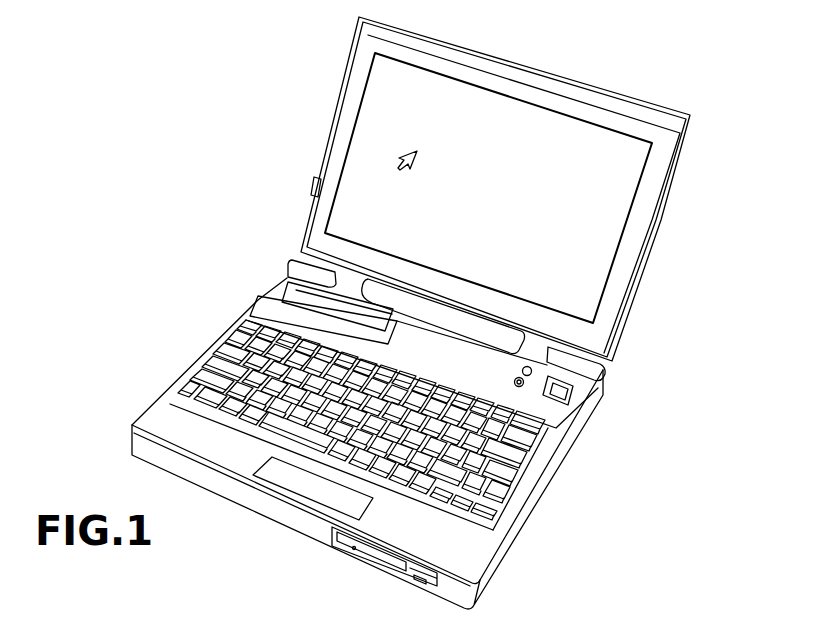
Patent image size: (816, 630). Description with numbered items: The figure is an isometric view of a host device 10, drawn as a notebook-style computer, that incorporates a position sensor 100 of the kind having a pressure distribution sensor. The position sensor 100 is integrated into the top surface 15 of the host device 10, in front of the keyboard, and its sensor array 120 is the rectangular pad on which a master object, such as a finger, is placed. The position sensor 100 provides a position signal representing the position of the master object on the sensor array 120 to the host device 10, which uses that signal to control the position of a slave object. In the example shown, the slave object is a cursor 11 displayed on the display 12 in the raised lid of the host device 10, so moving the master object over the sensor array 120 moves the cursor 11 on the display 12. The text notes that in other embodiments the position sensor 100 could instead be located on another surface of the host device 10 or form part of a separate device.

The host device 10 is at (672, 211).
The cursor 11 is at (398, 172).
The display 12 is at (352, 125).
The top surface 15 is at (490, 563).
The position sensor 100 is at (310, 505).
The sensor array 120 is at (266, 462).